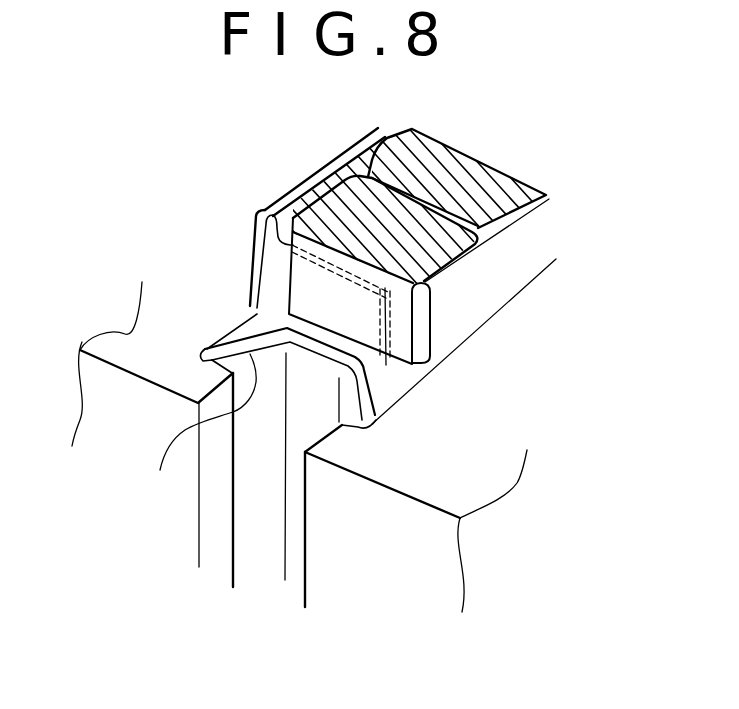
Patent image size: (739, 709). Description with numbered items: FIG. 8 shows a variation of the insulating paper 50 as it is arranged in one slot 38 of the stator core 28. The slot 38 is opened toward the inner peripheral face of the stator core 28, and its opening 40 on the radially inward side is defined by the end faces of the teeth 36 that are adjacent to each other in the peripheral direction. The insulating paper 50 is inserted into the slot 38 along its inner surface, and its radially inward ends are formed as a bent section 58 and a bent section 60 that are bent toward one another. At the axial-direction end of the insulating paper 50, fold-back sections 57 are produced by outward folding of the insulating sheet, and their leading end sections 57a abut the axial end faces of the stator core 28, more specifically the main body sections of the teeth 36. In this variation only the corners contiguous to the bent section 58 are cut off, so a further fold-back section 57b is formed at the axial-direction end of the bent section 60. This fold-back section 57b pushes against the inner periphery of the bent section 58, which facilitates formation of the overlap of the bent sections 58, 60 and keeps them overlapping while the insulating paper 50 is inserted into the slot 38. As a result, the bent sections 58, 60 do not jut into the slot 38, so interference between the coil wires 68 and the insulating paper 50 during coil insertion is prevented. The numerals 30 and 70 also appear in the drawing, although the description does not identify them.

The stator core 28 is at (82, 387).
The cushion body 30 is at (489, 143).
The teeth 36 is at (122, 338).
The slot 38 is at (243, 328).
The opening 40 is at (279, 527).
The insulating paper 50 is at (294, 165).
The fold-back section 57 is at (252, 257).
The leading end section 57a is at (258, 307).
The fold-back section 57b is at (400, 332).
The bent section 58 is at (388, 404).
The bent section 60 is at (400, 369).
The coil wires 68 is at (508, 190).
The curved portion 70 is at (197, 434).